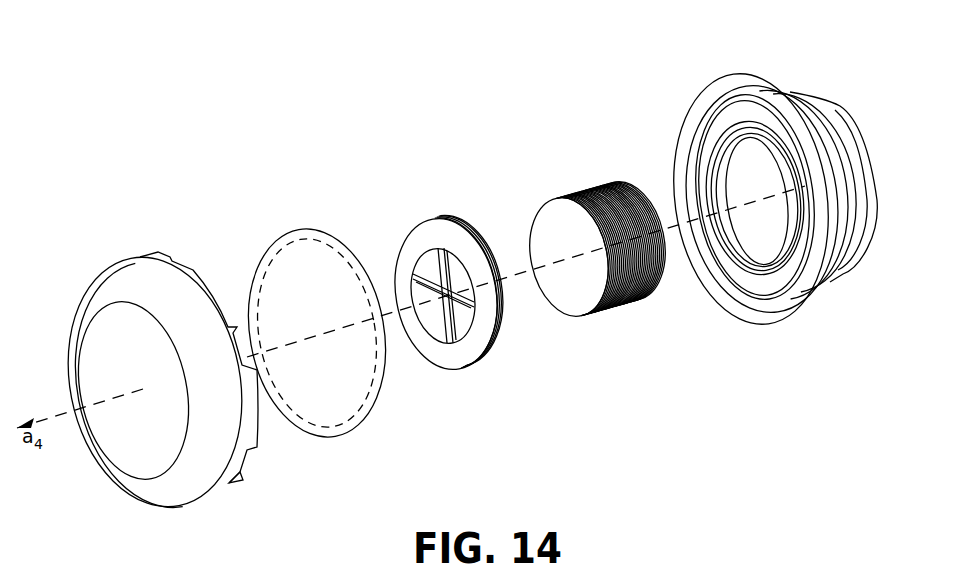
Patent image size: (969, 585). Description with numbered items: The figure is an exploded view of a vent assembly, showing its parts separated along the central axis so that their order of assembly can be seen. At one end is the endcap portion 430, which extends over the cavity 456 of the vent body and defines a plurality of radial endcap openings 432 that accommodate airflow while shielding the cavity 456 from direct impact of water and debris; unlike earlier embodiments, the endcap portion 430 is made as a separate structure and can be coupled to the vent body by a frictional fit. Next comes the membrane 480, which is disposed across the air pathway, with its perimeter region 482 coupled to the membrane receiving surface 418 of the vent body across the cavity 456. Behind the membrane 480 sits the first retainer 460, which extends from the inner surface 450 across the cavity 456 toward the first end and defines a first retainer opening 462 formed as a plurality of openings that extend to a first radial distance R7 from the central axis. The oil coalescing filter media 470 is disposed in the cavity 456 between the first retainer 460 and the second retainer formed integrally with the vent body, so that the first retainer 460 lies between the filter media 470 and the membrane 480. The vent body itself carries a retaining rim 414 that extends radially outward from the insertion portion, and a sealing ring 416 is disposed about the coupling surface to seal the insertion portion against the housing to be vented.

The radial endcap openings 432 is at (155, 357).
The endcap portion 430 is at (207, 297).
The perimeter region 482 is at (318, 247).
The membrane 480 is at (317, 319).
The first retainer opening 462 is at (426, 262).
The first retainer 460 is at (453, 295).
The first radial distance R7 is at (450, 311).
The oil coalescing filter media 470 is at (545, 218).
The cavity 456 is at (738, 148).
The membrane receiving surface 418 is at (697, 125).
The sealing ring 416 is at (823, 118).
The inner surface 450 is at (756, 230).
The retaining rim 414 is at (815, 290).